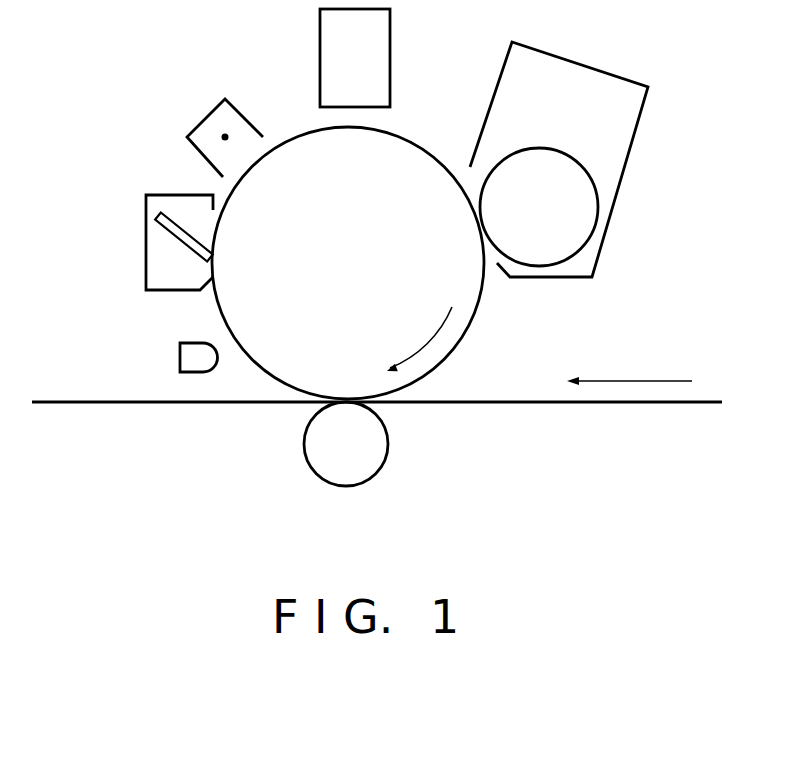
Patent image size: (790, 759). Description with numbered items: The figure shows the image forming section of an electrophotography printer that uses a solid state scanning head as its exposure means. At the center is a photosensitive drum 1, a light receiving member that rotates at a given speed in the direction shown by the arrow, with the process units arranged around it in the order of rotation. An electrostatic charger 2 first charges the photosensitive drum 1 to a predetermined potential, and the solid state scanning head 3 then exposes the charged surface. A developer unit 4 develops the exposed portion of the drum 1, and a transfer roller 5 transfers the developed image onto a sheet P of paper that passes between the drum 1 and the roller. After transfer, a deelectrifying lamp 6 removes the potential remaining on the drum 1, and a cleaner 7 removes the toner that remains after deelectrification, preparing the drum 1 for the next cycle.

The photosensitive drum 1 is at (410, 163).
The electrostatic charger 2 is at (205, 132).
The solid state scanning head 3 is at (330, 33).
The developer unit 4 is at (622, 127).
The transfer roller 5 is at (305, 443).
The deelectrifying lamp 6 is at (180, 356).
The cleaner 7 is at (153, 204).
The sheet of paper P is at (663, 403).